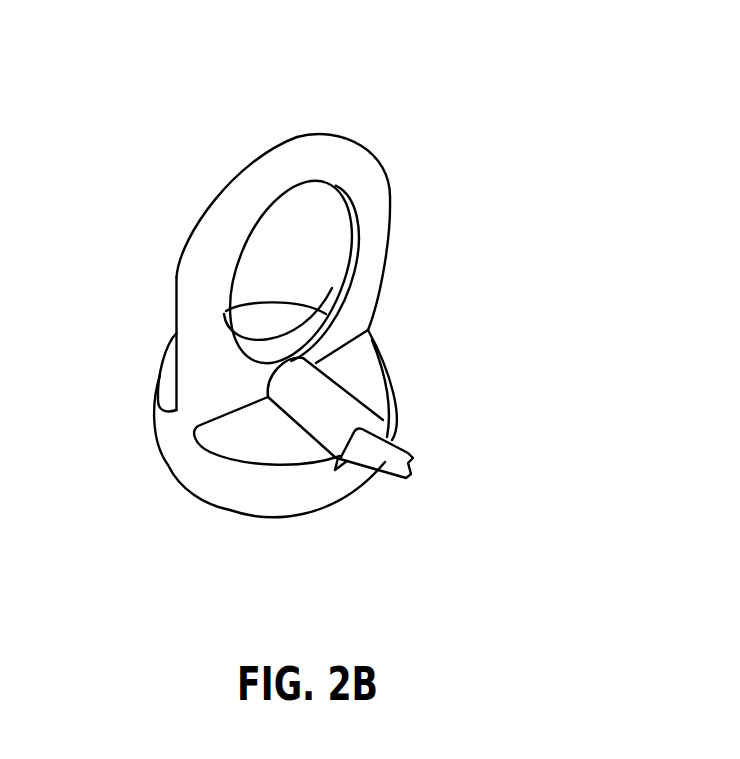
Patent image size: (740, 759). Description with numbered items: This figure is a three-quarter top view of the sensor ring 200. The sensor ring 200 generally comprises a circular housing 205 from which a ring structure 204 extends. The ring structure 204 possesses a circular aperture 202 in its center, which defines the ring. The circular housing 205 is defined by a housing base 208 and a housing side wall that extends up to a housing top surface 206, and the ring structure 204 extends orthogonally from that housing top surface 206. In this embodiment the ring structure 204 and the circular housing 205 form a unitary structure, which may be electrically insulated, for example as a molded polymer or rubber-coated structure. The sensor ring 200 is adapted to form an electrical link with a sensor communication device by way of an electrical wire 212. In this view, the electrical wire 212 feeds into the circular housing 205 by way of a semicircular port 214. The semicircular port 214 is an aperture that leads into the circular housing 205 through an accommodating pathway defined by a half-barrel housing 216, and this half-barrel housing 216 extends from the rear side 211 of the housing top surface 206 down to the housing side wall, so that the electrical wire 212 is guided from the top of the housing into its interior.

The sensor ring 200 is at (317, 64).
The circular aperture 202 is at (326, 247).
The ring structure 204 is at (183, 308).
The circular housing 205 is at (202, 474).
The housing top surface 206 is at (360, 387).
The housing base 208 is at (300, 520).
The rear side 211 is at (246, 400).
The electrical wire 212 is at (392, 437).
The semicircular port 214 is at (350, 458).
The half-barrel housing 216 is at (313, 382).